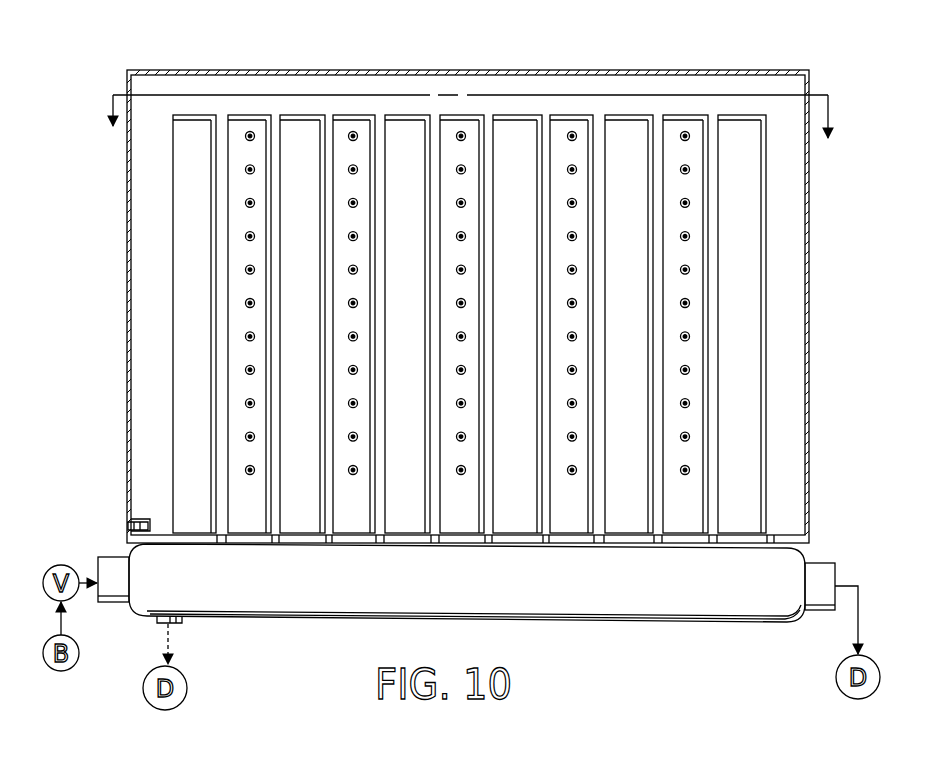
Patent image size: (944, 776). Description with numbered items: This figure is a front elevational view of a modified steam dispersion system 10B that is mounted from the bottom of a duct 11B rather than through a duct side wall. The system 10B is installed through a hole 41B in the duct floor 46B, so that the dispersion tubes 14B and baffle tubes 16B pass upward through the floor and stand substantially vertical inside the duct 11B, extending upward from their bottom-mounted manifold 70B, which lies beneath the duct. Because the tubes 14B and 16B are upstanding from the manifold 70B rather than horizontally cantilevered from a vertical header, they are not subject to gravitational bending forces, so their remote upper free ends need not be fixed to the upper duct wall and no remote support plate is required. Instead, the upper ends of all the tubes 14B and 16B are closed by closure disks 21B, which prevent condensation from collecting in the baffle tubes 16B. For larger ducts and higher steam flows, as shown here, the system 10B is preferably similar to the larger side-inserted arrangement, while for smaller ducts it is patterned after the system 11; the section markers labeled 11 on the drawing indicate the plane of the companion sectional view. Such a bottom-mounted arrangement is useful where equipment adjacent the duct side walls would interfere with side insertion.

The system 10B is at (414, 275).
The duct 11B is at (127, 185).
The system 11 is at (469, 109).
The dispersion tube 14B is at (468, 275).
The baffle tube 16B is at (197, 125).
The closure disk 21B is at (308, 117).
The hole 41B is at (136, 526).
The duct floor 46B is at (127, 522).
The manifold 70B is at (580, 621).